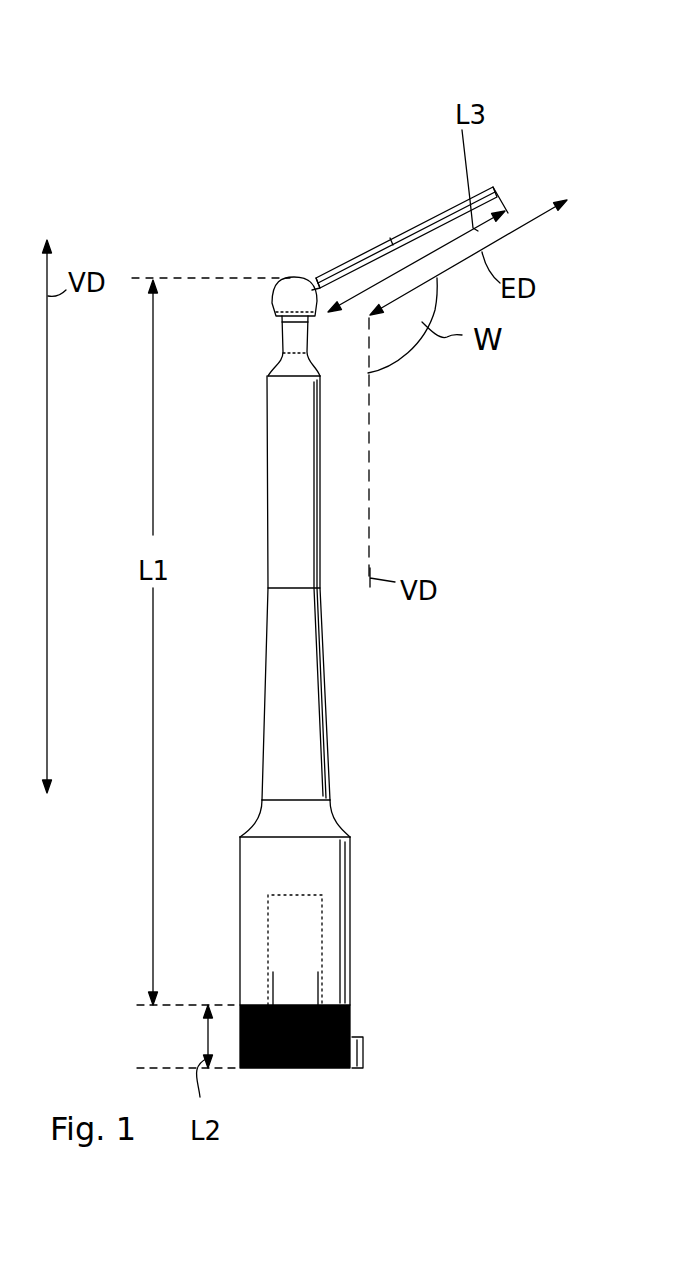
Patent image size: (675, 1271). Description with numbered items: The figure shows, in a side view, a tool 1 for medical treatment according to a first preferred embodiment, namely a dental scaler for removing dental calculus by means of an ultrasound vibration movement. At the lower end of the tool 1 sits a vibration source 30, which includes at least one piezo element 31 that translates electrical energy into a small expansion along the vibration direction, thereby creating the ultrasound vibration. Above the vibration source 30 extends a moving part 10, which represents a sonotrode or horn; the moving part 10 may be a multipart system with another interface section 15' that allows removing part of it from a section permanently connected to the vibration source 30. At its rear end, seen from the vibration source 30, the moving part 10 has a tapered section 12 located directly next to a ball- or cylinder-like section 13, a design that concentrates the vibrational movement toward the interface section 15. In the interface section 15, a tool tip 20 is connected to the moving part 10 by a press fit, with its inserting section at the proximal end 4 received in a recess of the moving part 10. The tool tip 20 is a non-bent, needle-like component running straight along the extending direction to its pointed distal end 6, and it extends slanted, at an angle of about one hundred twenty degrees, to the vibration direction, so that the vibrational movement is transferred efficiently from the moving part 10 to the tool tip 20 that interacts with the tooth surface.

The tool 1 is at (98, 78).
The proximal end 4 is at (316, 280).
The distal end 6 is at (493, 187).
The moving part 10 is at (216, 480).
The tapered section 12 is at (250, 330).
The ball- or cylinder-like section 13 is at (287, 293).
The interface section 15 is at (270, 211).
The another interface section 15' is at (335, 622).
The tool tip 20 is at (383, 200).
The vibration source 30 is at (403, 1019).
The piezo element 31 is at (352, 1020).